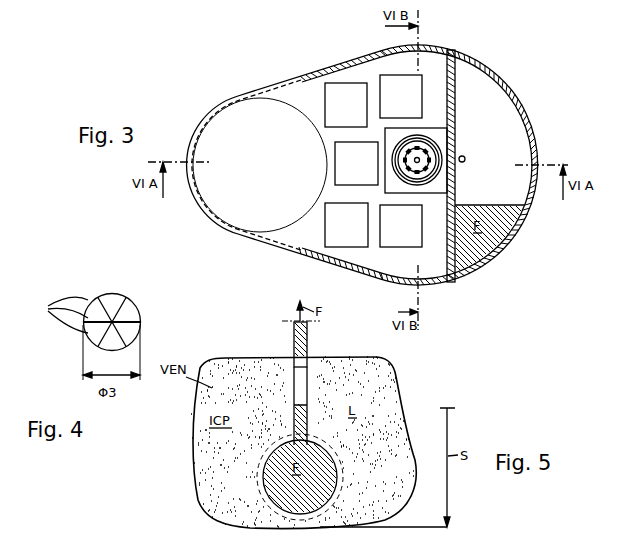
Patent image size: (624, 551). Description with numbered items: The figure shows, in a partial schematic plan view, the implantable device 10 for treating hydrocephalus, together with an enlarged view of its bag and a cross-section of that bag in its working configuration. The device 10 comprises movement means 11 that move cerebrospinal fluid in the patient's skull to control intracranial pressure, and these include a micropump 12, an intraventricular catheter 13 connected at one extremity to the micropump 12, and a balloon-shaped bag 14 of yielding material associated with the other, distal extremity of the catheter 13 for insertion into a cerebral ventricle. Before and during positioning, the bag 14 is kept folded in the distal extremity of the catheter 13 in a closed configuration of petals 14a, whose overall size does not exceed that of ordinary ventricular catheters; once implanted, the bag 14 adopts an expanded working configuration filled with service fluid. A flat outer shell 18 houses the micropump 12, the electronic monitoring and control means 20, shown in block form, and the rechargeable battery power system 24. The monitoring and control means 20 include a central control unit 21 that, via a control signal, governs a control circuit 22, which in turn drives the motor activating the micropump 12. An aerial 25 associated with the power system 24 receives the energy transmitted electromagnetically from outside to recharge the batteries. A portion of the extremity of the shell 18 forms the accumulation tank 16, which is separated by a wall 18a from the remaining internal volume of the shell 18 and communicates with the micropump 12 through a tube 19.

In FIG. 3, the implantable device 10 is at (535, 51).
In FIG. 3, the movement means 11 is at (489, 50).
In FIG. 3, the micropump 12 is at (438, 185).
In FIG. 4, the intraventricular catheter 13 is at (141, 316).
In FIG. 5, the intraventricular catheter 13 is at (292, 342).
In FIG. 4, the balloon-shaped bag 14 is at (133, 295).
In FIG. 5, the balloon-shaped bag 14 is at (262, 488).
In FIG. 4, the petals 14a is at (51, 315).
In FIG. 3, the accumulation tank or expansion chamber 16 is at (490, 126).
In FIG. 3, the flat outer shell 18 is at (318, 66).
In FIG. 3, the wall 18a is at (456, 92).
In FIG. 3, the tube 19 is at (465, 160).
In FIG. 3, the electronic monitoring and control means 20 is at (356, 80).
In FIG. 3, the central control unit 21 is at (354, 115).
In FIG. 3, the control circuit 22 is at (408, 106).
In FIG. 3, the power system 24 is at (226, 110).
In FIG. 3, the aerial 25 is at (363, 172).